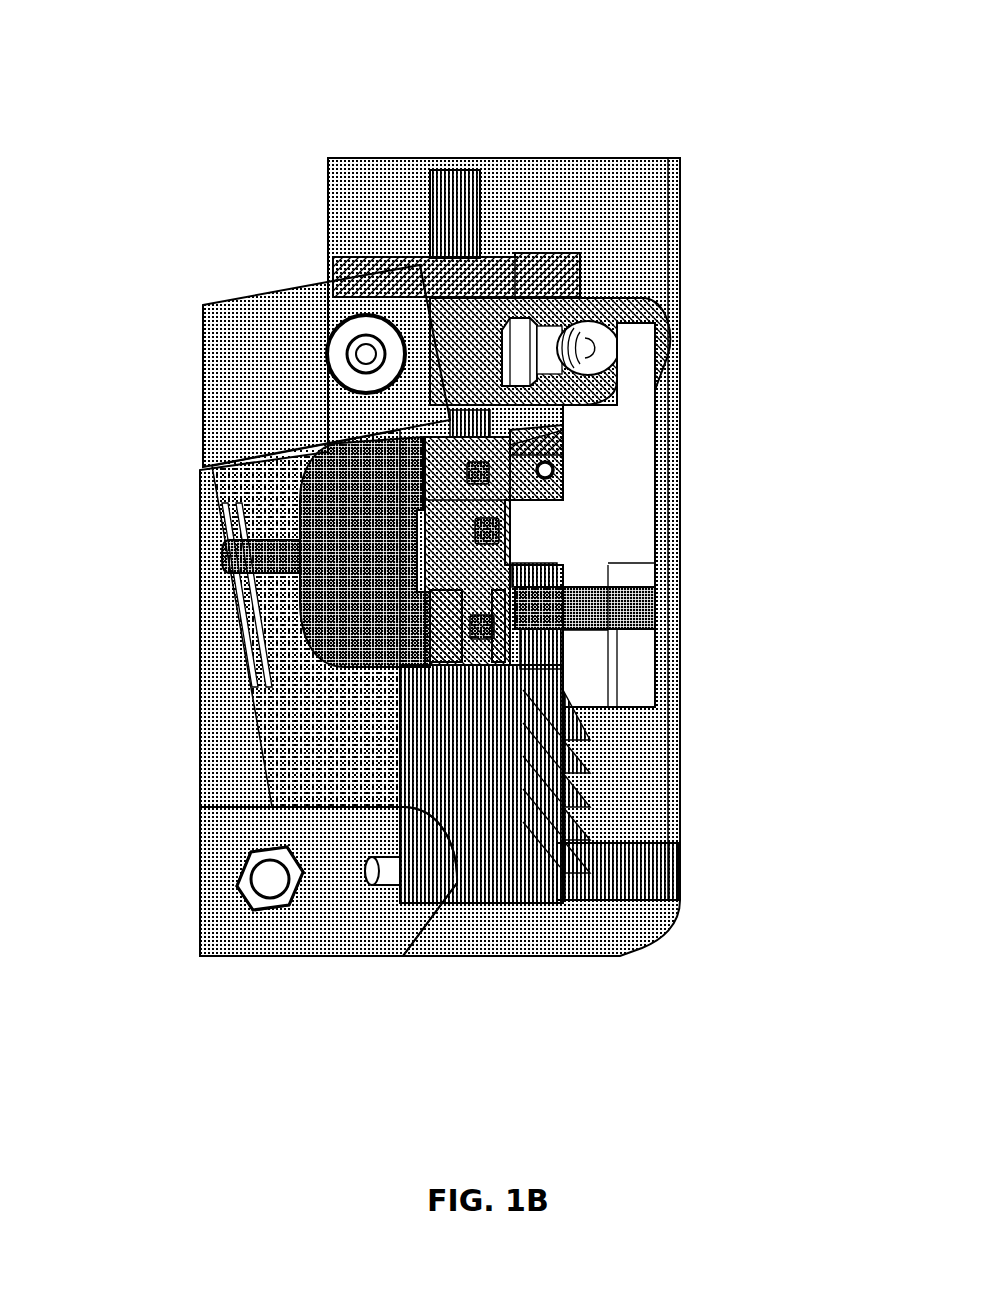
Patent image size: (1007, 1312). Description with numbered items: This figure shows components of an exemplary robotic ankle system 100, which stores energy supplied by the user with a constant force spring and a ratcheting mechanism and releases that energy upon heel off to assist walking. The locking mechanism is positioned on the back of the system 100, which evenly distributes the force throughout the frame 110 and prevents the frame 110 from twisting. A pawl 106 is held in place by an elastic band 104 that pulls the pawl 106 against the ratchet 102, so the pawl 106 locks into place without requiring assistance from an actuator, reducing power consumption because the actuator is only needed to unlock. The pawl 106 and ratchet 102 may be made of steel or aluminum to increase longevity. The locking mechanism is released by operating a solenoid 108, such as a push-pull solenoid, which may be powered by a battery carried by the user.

The robotic ankle system 100 is at (483, 482).
The ratchet 102 is at (552, 795).
The elastic band 104 is at (640, 608).
The pawl 106 is at (633, 500).
The solenoid 108 is at (337, 618).
The frame 110 is at (658, 283).